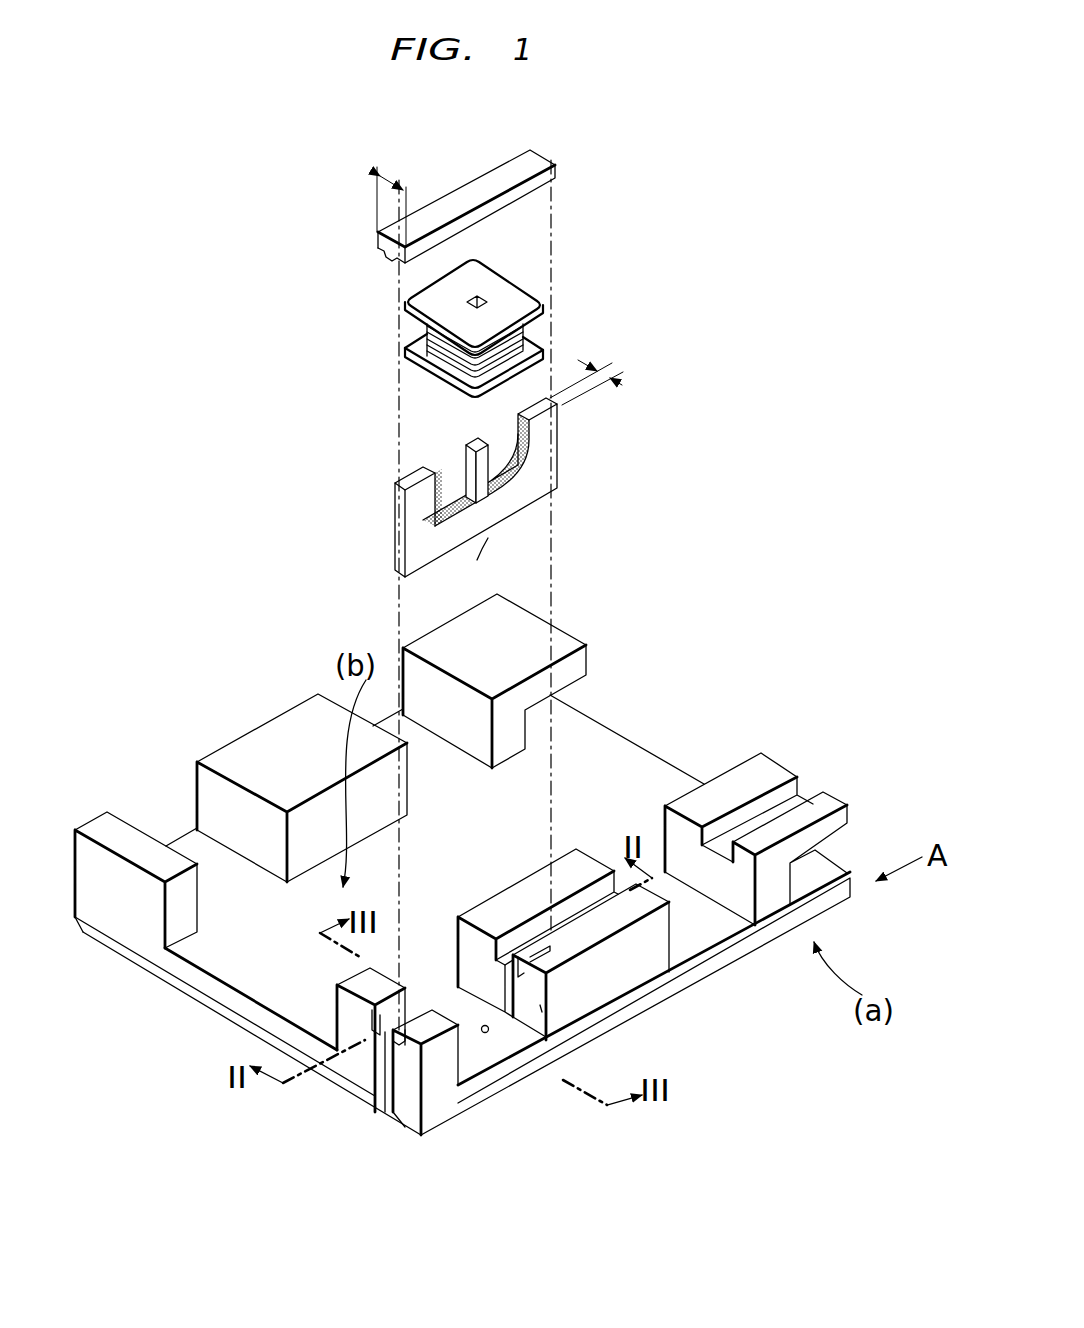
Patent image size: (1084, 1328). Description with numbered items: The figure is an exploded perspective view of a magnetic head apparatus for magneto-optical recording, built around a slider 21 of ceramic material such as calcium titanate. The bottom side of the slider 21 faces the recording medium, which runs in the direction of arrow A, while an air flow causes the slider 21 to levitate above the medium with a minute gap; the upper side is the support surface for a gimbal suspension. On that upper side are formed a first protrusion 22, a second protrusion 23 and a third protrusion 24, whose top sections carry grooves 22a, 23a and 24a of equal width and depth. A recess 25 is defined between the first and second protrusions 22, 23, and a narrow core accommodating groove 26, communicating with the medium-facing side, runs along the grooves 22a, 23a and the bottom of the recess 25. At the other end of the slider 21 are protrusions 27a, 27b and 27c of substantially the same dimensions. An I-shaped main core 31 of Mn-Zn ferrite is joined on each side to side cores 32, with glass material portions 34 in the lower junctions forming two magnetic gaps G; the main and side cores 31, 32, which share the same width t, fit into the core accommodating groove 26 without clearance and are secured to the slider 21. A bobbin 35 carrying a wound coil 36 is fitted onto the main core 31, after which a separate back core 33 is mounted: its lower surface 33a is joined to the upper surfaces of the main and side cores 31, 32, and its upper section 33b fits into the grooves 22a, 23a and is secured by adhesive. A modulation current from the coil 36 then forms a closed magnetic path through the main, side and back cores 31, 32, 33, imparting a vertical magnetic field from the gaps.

The slider 21 is at (653, 749).
The first protrusion 22 is at (438, 1073).
The groove 22a is at (410, 1013).
The second protrusion 23 is at (632, 970).
The groove 23a is at (587, 910).
The third protrusion 24 is at (842, 820).
The groove 24a is at (785, 776).
The recess 25 is at (538, 1008).
The core accommodating groove 26 is at (485, 1034).
The protrusion 27a is at (125, 842).
The protrusion 27b is at (235, 753).
The protrusion 27c is at (520, 632).
The main core 31 is at (480, 468).
The side cores 32 is at (547, 432).
The back core 33 is at (468, 192).
The lower surface of the back core 33a is at (393, 263).
The upper section of the back core 33b is at (557, 175).
The glass material portions 34 is at (462, 512).
The bobbin 35 is at (478, 272).
The coil 36 is at (523, 333).